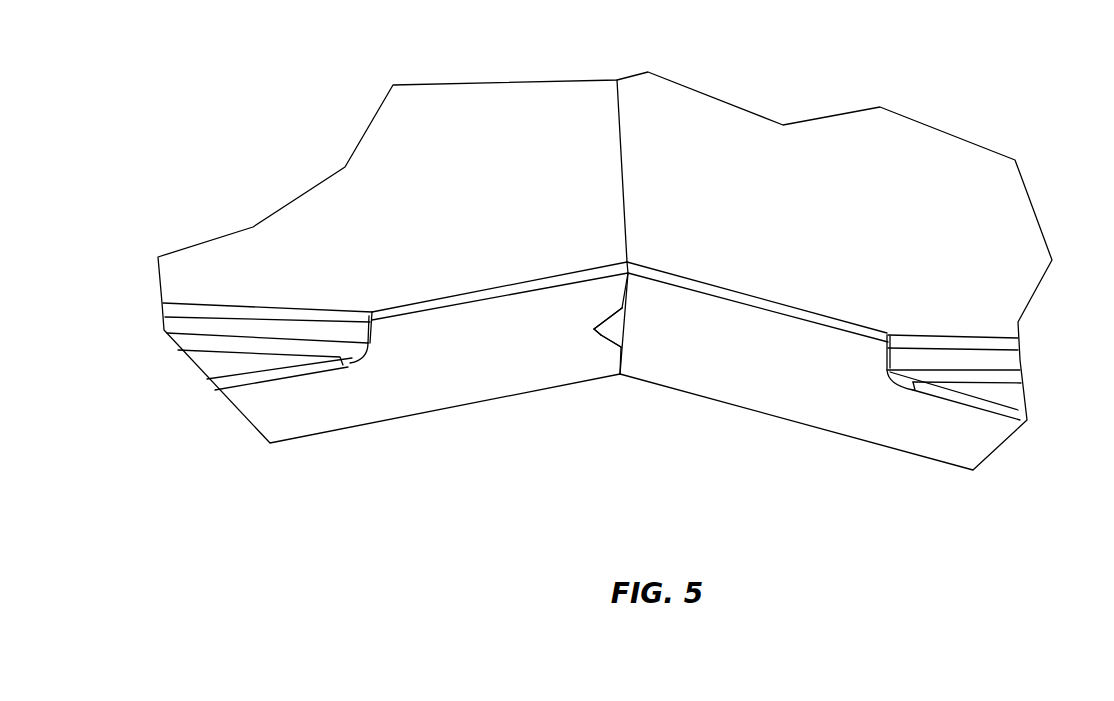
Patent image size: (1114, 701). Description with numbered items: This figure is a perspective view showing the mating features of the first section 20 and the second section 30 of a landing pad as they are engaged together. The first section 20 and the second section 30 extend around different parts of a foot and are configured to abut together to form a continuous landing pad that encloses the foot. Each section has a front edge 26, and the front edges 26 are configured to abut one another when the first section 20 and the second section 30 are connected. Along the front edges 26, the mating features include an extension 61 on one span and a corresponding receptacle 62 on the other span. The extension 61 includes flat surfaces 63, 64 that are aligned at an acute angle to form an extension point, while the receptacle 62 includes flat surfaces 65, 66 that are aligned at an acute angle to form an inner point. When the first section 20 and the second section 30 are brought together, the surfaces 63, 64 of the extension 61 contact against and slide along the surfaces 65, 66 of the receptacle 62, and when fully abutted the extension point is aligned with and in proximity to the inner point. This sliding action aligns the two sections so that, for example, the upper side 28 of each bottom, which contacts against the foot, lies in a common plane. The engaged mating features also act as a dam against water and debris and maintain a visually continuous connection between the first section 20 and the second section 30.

The first section 20 is at (465, 128).
The front edge 26 is at (617, 113).
The upper side 28 is at (265, 257).
The second section 30 is at (947, 172).
The extension 61 is at (640, 345).
The receptacle 62 is at (585, 338).
The flat surface 63 is at (630, 318).
The flat surface 64 is at (622, 337).
The flat surface 65 is at (604, 321).
The flat surface 66 is at (604, 341).